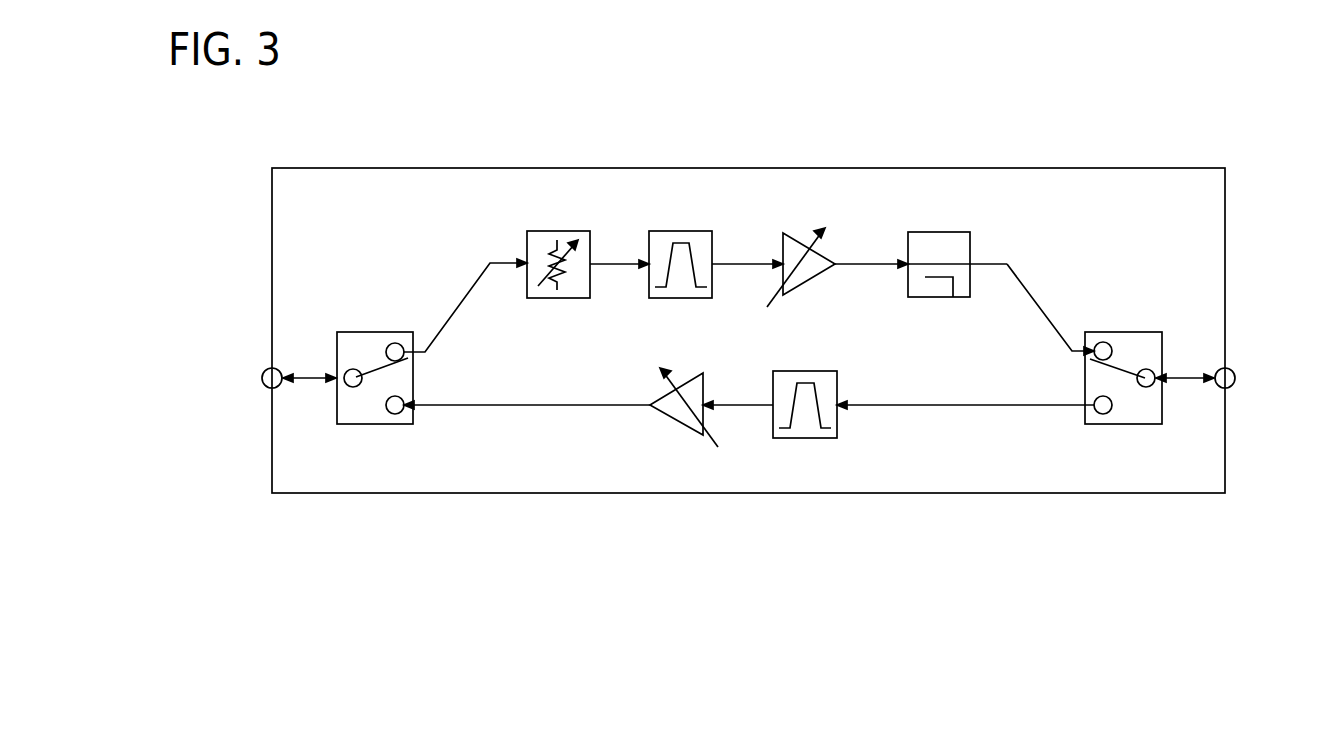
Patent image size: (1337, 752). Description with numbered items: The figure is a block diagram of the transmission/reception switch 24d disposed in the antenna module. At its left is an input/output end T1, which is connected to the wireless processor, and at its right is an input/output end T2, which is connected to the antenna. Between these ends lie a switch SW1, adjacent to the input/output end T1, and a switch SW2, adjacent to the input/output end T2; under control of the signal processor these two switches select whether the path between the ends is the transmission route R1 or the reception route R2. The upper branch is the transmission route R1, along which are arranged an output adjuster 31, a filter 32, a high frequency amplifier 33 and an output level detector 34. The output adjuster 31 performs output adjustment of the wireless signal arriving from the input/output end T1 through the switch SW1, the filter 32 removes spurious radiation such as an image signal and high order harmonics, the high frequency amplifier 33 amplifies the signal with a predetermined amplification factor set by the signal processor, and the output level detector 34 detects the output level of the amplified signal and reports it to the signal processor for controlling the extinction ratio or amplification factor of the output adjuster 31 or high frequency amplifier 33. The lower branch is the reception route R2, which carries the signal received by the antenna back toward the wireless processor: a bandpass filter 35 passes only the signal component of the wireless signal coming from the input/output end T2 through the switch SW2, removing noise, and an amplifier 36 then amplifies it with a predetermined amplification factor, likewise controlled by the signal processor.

The transmission/reception switch 24d is at (1093, 168).
The input/output end T1 is at (261, 378).
The input/output end T2 is at (1236, 378).
The switch SW1 is at (372, 332).
The switch SW2 is at (1120, 332).
The transmission route R1 is at (475, 252).
The reception route R2 is at (523, 430).
The output adjuster 31 is at (565, 231).
The filter 32 is at (688, 231).
The high frequency amplifier 33 is at (790, 237).
The output level detector 34 is at (945, 232).
The bandpass filter 35 is at (810, 371).
The amplifier 36 is at (693, 378).